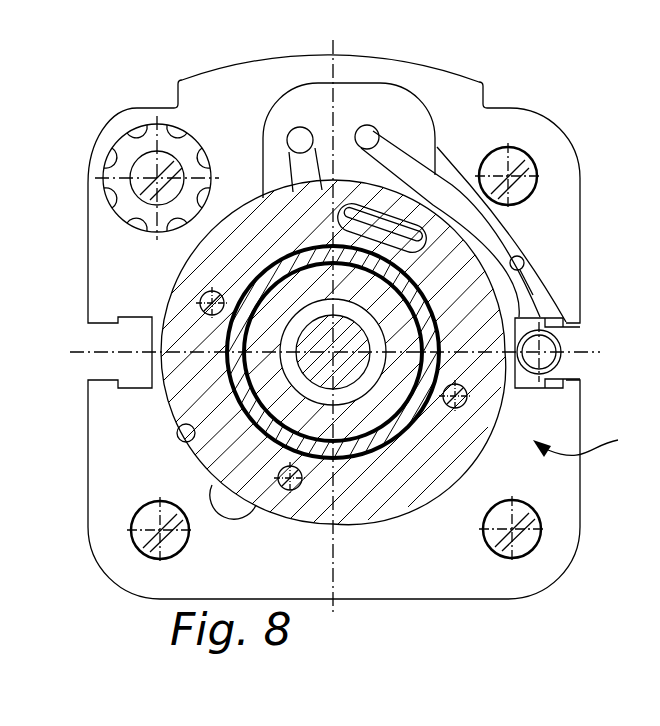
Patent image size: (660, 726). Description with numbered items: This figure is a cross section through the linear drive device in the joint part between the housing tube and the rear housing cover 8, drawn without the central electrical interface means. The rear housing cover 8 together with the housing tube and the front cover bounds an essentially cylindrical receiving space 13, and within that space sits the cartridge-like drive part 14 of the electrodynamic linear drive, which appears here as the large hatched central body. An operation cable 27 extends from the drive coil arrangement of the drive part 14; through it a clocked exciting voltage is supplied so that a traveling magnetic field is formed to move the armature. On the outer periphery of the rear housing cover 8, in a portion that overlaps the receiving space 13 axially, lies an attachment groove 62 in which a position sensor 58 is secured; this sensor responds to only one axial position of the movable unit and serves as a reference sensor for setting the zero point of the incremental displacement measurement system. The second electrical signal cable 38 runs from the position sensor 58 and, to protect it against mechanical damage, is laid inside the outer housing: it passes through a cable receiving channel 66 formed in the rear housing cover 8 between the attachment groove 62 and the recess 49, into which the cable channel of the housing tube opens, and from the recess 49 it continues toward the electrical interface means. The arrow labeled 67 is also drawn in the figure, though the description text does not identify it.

The rear housing cover 8 is at (487, 128).
The receiving space 13 is at (197, 433).
The drive part 14 is at (193, 290).
The operation cable 27 is at (295, 157).
The second electrical signal cable 38 is at (482, 233).
The recess 49 is at (368, 104).
The position sensor 58 is at (562, 340).
The attachment groove 62 is at (577, 370).
The cable receiving channel 66 is at (522, 268).
The direction of rotation arrow 67 is at (590, 443).